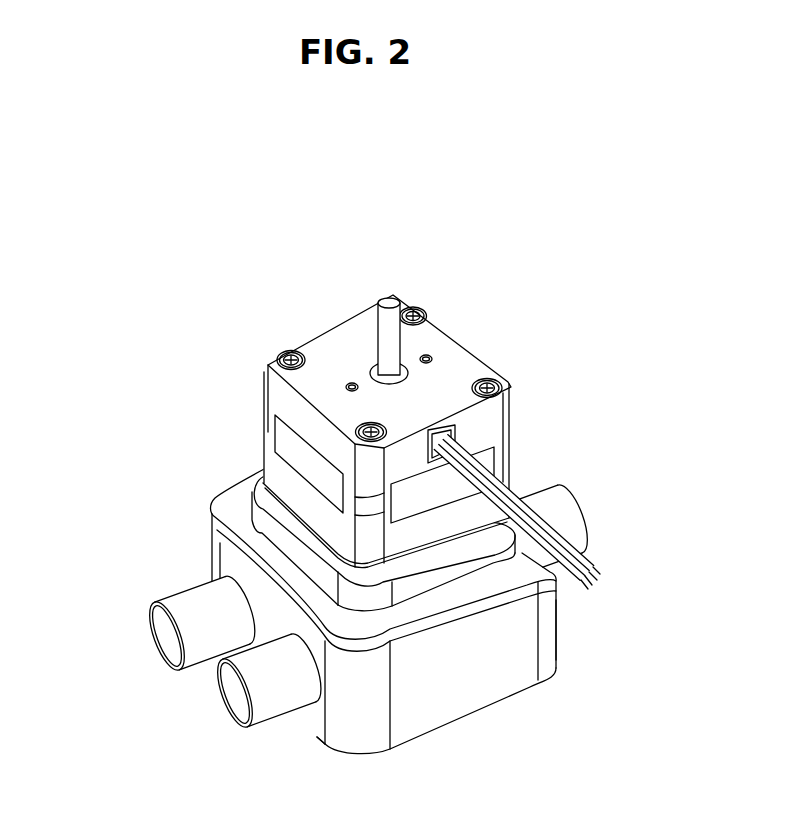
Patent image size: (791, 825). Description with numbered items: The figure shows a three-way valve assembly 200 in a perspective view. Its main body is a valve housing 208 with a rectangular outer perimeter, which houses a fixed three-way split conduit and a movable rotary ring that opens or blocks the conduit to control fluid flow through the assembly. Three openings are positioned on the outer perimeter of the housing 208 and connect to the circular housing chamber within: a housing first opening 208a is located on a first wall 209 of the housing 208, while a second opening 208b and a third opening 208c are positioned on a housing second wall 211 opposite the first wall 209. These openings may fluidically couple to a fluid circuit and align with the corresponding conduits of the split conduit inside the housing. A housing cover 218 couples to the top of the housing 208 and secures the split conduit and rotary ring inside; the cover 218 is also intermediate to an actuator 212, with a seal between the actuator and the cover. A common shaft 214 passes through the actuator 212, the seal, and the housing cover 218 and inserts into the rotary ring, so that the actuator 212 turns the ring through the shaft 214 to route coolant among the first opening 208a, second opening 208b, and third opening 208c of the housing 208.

The three-way valve assembly 200 is at (131, 235).
The valve housing 208 is at (445, 688).
The housing first opening 208a is at (573, 517).
The second opening 208b is at (157, 625).
The third opening 208c is at (228, 685).
The housing first wall 209 is at (572, 640).
The housing second wall 211 is at (312, 717).
The actuator 212 is at (429, 425).
The common shaft 214 is at (388, 348).
The housing cover 218 is at (223, 497).